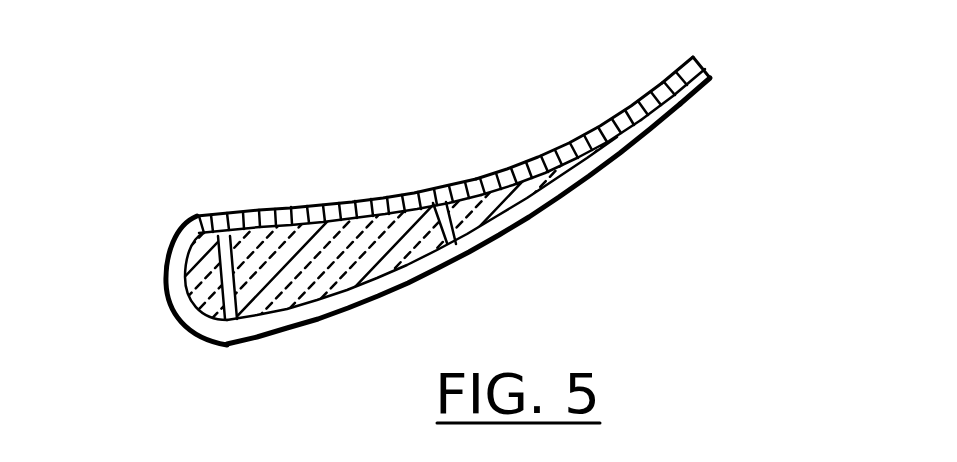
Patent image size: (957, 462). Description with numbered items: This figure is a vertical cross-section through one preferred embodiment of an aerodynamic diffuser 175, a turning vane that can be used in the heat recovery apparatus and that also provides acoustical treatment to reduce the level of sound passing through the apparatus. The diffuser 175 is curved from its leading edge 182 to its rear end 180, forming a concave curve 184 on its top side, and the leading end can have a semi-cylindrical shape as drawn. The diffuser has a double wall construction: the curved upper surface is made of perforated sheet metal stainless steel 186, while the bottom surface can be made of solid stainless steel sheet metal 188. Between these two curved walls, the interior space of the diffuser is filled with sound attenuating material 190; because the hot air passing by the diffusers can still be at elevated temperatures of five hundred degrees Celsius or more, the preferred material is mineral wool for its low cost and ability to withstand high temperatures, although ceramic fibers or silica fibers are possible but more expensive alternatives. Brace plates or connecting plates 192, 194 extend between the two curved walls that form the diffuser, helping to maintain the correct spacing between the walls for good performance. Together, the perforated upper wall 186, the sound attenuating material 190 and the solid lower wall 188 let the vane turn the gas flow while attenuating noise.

The aerodynamic diffuser 175 is at (438, 193).
The rear end 180 is at (697, 66).
The leading edge 182 is at (167, 282).
The concave curve 184 is at (356, 201).
The perforated sheet metal stainless steel 186 is at (580, 142).
The solid stainless steel sheet metal 188 is at (433, 273).
The sound attenuating material 190 is at (280, 238).
The brace plate 192 is at (232, 288).
The brace plate 194 is at (457, 221).